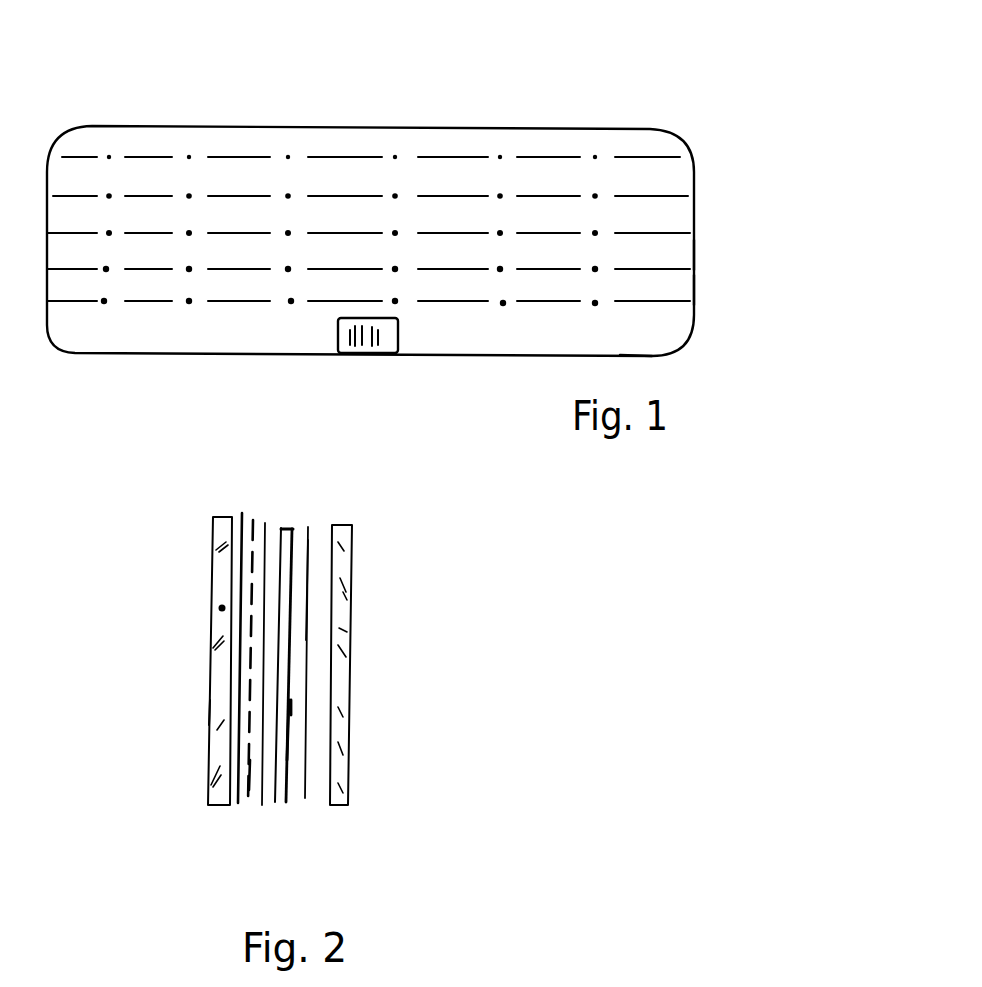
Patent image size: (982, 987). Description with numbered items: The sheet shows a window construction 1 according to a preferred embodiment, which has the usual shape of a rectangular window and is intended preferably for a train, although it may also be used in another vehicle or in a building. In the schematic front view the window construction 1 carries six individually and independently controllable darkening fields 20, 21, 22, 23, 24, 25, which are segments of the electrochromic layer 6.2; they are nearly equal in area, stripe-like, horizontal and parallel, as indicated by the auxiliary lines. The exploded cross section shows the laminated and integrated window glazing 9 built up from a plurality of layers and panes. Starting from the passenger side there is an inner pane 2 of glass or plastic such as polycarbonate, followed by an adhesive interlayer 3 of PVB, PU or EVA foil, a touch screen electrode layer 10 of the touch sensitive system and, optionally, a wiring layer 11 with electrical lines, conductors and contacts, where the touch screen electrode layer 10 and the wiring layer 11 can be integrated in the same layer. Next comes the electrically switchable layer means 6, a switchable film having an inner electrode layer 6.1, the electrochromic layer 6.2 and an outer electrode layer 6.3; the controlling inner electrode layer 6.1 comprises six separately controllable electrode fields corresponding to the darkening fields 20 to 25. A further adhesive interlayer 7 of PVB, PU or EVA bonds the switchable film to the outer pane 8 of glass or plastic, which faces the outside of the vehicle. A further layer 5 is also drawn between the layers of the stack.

In FIG. 1, the window construction 1 is at (433, 237).
In FIG. 2, the window construction 1 is at (346, 657).
In FIG. 2, the inner pane 2 is at (213, 547).
In FIG. 2, the interlayer 3 is at (242, 512).
In FIG. 2, the carrier layer 5 is at (258, 803).
In FIG. 2, the electrically switchable layer means 6 is at (275, 783).
In FIG. 2, the inner electrode layer 6.1 is at (283, 755).
In FIG. 2, the electrochromic layer 6.2 is at (303, 798).
In FIG. 2, the outer electrode layer 6.3 is at (287, 707).
In FIG. 2, the further adhesive interlayer 7 is at (310, 535).
In FIG. 2, the outer pane 8 is at (345, 562).
In FIG. 2, the window glazing 9 is at (208, 712).
In FIG. 2, the touch screen electrode layer 10 is at (247, 778).
In FIG. 2, the wiring layer 11 is at (258, 520).
In FIG. 1, the darkening field 20 is at (664, 131).
In FIG. 1, the darkening field 21 is at (675, 182).
In FIG. 1, the darkening field 22 is at (677, 220).
In FIG. 1, the darkening field 23 is at (683, 255).
In FIG. 1, the darkening field 24 is at (682, 290).
In FIG. 1, the darkening field 25 is at (668, 357).